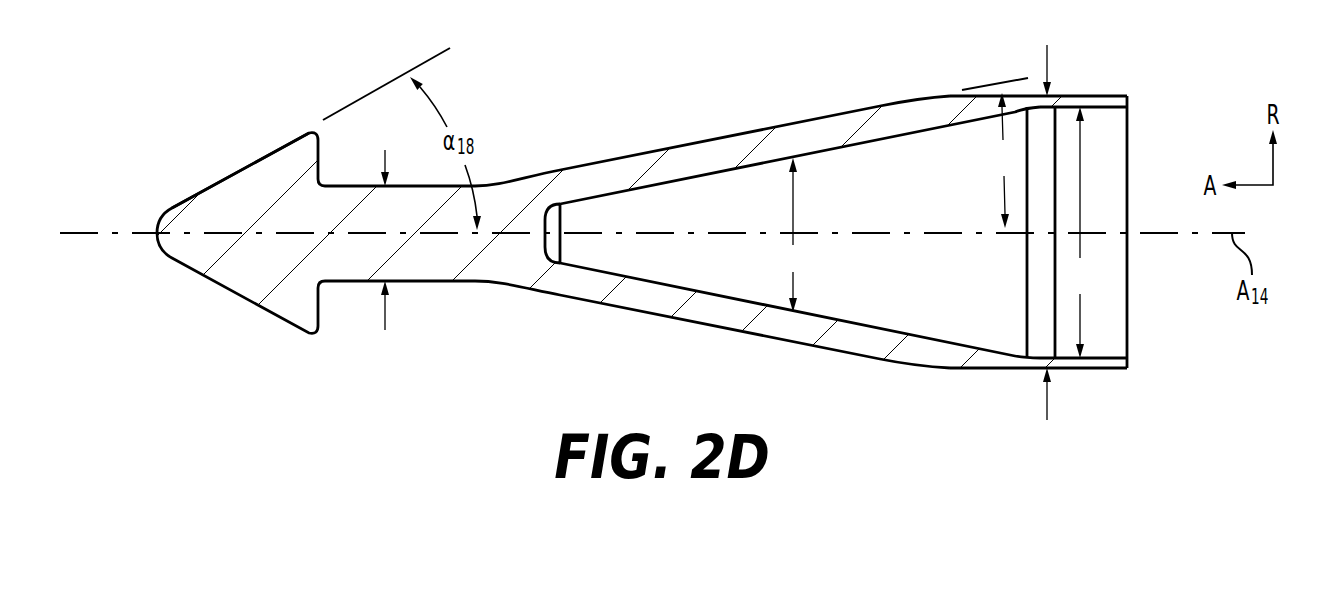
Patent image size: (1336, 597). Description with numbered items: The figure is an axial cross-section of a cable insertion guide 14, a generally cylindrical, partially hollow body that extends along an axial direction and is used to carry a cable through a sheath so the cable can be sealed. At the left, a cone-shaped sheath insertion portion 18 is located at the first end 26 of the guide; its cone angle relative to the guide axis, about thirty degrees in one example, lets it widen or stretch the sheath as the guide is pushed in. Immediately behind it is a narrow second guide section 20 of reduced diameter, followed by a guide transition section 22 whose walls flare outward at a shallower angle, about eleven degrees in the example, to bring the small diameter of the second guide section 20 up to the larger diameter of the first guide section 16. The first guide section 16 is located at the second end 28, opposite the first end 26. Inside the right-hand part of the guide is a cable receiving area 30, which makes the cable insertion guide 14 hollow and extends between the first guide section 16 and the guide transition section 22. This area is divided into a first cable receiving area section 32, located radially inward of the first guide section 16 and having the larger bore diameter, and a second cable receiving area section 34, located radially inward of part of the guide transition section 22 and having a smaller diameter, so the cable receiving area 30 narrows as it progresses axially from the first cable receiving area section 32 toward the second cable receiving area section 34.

The cable insertion guide 14 is at (913, 404).
The first guide section 16 is at (1090, 96).
The sheath insertion portion 18 is at (227, 290).
The second guide section 20 is at (437, 281).
The guide transition section 22 is at (713, 326).
The first end 26 is at (218, 134).
The second end 28 is at (1126, 407).
The cable receiving area 30 is at (962, 295).
The first cable receiving area section 32 is at (1093, 183).
The second cable receiving area section 34 is at (726, 215).